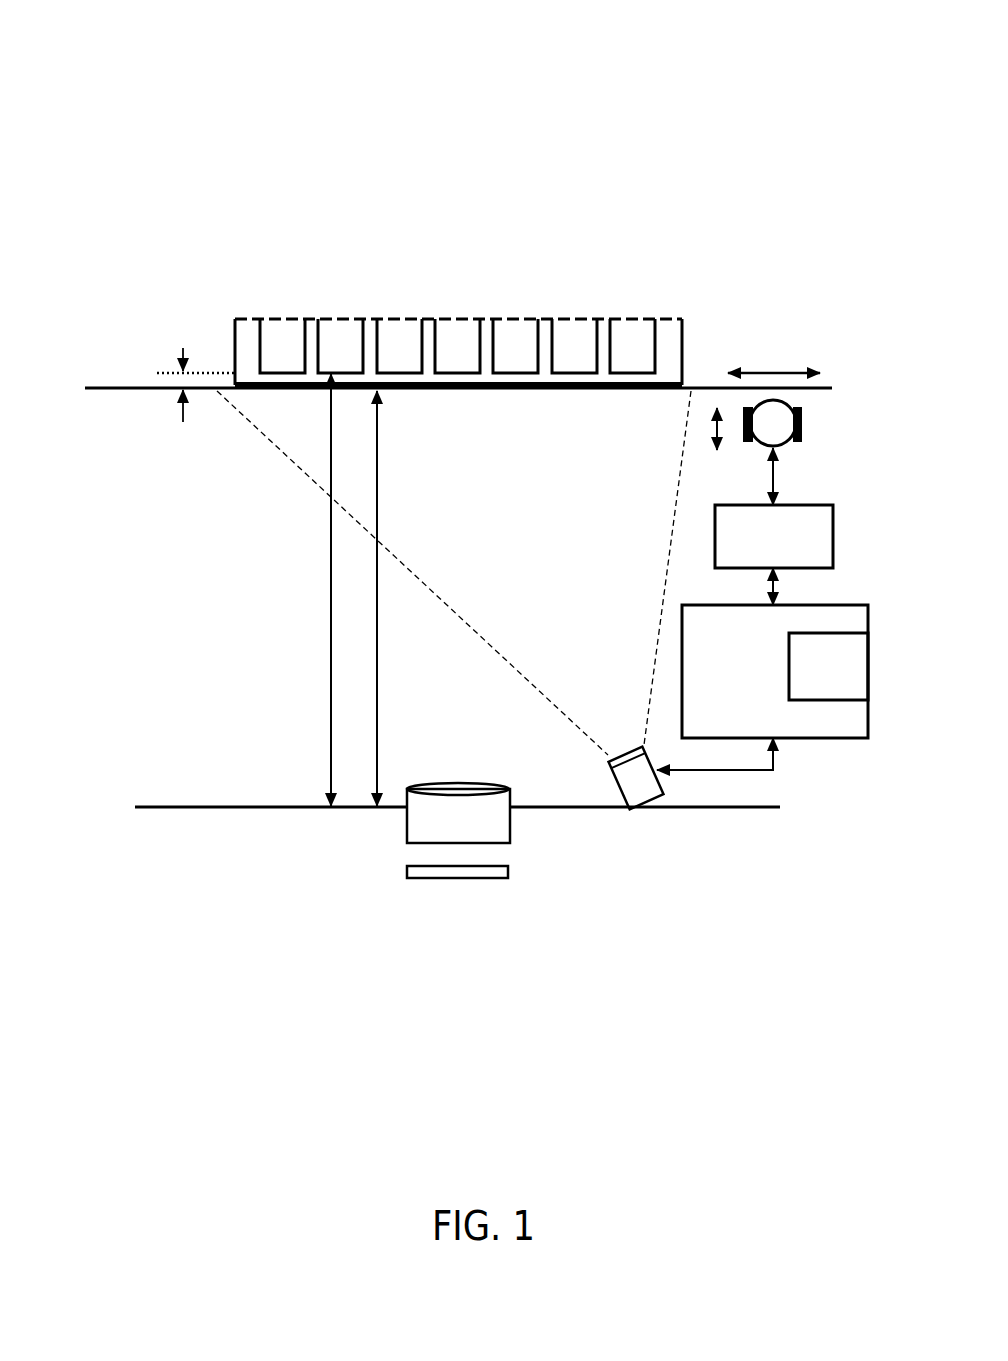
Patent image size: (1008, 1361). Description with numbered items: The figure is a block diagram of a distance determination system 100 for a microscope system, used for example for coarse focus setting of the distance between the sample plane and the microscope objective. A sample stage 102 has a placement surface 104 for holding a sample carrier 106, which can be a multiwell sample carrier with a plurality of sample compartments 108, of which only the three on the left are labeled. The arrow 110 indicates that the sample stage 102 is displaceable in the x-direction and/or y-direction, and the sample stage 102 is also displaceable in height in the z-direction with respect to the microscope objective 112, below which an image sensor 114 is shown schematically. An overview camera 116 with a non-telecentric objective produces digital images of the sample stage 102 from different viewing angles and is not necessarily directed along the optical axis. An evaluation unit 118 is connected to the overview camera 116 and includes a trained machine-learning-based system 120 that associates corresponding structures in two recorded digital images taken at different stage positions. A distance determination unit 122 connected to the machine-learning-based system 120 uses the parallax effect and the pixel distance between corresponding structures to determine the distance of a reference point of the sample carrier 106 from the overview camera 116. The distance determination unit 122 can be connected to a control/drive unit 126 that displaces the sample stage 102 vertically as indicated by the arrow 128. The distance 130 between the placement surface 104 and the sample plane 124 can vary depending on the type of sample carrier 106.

The distance determination system 100 is at (243, 68).
The sample stage 102 is at (131, 380).
The placement surface 104 is at (681, 384).
The sample carrier 106 is at (672, 317).
The sample compartments 108 is at (398, 340).
The arrow 110 is at (763, 366).
The microscope objective 112 is at (513, 830).
The image sensor 114 is at (508, 874).
The overview camera 116 is at (665, 798).
The evaluation unit 118 is at (744, 640).
The trained machine-learning-based system 120 is at (848, 677).
The distance determination unit 122 is at (795, 548).
The sample plane 124 is at (222, 369).
The control/drive unit 126 is at (811, 414).
The arrow 128 is at (710, 428).
The distance 130 is at (172, 380).